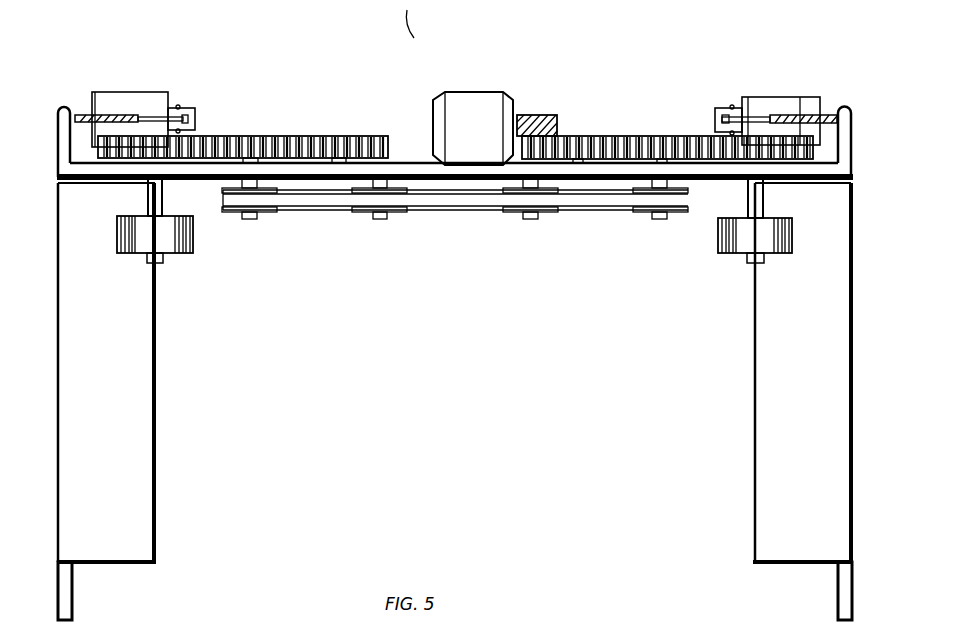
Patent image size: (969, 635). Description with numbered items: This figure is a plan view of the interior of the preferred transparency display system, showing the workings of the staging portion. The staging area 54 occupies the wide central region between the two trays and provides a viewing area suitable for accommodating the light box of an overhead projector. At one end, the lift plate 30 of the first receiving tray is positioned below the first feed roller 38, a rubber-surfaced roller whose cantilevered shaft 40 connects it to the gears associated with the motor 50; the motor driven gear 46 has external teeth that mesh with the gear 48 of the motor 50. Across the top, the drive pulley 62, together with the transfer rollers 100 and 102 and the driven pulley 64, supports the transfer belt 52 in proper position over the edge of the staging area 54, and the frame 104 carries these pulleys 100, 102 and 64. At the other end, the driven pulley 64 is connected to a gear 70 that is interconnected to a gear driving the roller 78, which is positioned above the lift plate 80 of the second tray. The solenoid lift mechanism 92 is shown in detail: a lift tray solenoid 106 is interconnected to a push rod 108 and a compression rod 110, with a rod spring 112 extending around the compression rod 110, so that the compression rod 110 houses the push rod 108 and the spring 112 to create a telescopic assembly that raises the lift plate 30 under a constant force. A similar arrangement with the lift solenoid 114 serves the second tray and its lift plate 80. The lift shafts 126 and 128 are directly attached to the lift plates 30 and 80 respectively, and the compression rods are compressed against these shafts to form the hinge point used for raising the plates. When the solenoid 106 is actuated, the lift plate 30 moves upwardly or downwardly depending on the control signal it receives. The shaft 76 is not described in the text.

The lift plate 30 is at (782, 455).
The first feed roller 38 is at (718, 232).
The cantilevered shaft 40 is at (763, 195).
The motor driven gear 46 is at (603, 136).
The gear of motor 48 is at (548, 115).
The motor 50 is at (467, 100).
The transfer belt 52 is at (446, 200).
The staging area 54 is at (455, 455).
The drive pulley 62 is at (632, 212).
The driven pulley 64 is at (275, 210).
The gear 70 is at (238, 136).
The left roller shaft 76 is at (150, 192).
The roller 78 is at (190, 228).
The lift plate 80 is at (126, 455).
The solenoid lift mechanism 92 is at (792, 74).
The transfer roller 100 is at (510, 214).
The transfer roller 102 is at (366, 214).
The frame 104 is at (425, 172).
The lift tray solenoid 106 is at (808, 100).
The push rod 108 is at (755, 100).
The compression rod 110 is at (790, 117).
The rod spring 112 is at (820, 117).
The lift solenoid 114 is at (105, 92).
The lift shaft 126 is at (843, 590).
The lift shaft 128 is at (63, 590).